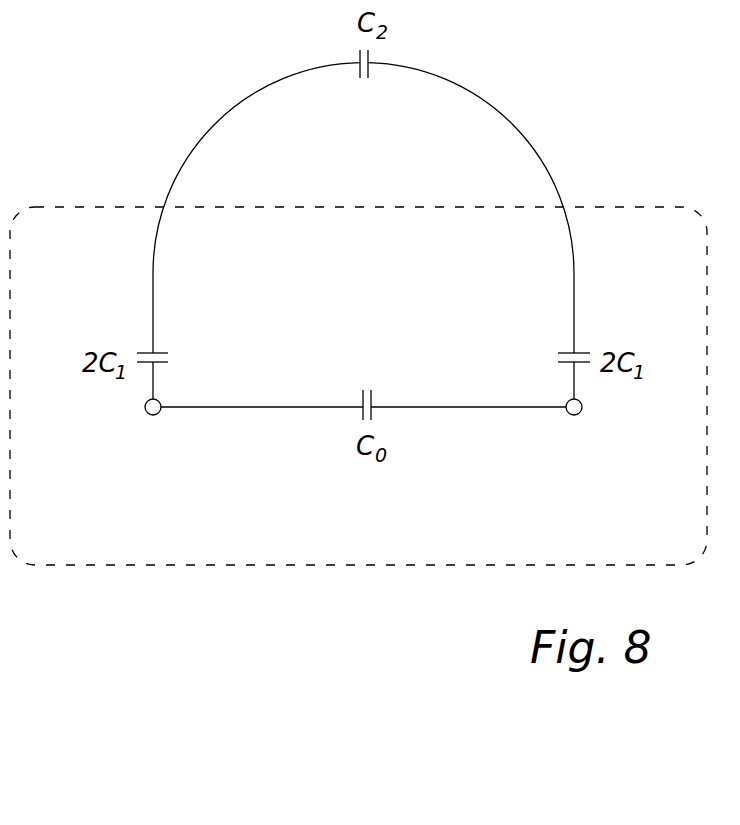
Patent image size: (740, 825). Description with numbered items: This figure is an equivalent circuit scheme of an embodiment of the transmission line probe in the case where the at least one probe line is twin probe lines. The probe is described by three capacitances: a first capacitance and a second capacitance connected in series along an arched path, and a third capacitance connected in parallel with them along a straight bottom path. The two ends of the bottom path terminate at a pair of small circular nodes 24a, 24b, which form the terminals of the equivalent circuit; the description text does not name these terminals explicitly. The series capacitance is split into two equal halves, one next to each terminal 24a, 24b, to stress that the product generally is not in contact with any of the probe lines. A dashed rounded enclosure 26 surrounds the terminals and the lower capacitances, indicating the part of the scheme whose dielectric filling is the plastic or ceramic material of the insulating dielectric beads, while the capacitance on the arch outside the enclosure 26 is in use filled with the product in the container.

The first port terminal 24a is at (150, 433).
The second port terminal 24b is at (571, 433).
The resonator enclosure / circuit block 26 is at (322, 565).